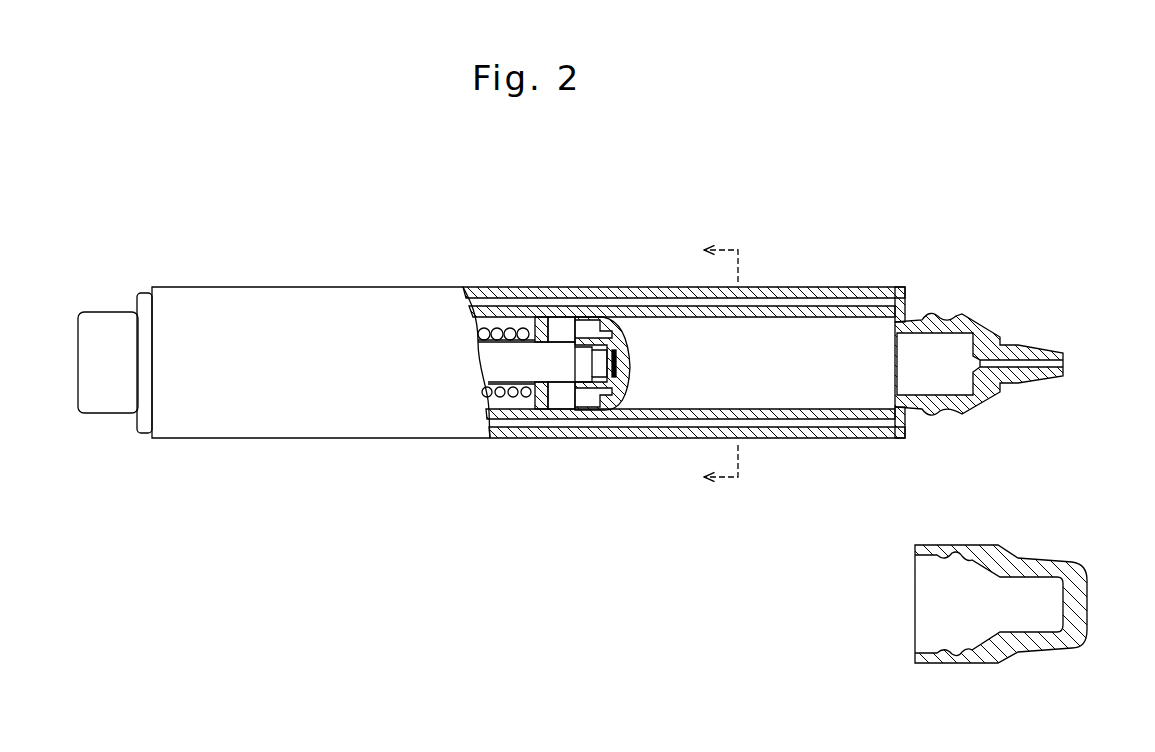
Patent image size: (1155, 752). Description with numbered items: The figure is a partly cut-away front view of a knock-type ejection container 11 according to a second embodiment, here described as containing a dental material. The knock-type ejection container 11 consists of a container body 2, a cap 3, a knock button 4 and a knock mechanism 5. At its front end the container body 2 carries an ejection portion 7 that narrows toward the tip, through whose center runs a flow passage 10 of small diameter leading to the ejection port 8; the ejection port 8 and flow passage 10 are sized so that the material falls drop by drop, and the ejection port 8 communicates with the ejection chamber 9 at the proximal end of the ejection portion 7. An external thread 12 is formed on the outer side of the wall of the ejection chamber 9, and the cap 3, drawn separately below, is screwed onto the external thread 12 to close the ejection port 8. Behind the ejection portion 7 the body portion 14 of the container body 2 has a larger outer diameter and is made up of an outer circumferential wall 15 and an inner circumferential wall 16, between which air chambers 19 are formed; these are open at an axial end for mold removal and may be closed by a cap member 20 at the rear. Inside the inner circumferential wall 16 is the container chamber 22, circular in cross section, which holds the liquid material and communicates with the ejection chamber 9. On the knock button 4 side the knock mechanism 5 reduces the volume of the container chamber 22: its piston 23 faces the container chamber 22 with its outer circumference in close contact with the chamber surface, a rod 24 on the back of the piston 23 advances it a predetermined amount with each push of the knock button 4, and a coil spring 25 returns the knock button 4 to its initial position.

The container body 2 is at (344, 254).
The cap 3 is at (1040, 556).
The knock button 4 is at (100, 408).
The knock mechanism 5 is at (633, 365).
The ejection portion 7 is at (966, 306).
The ejection port 8 is at (1065, 364).
The ejection chamber 9 is at (927, 374).
The flow passage 10 is at (1020, 345).
The knock-type ejection container 11 is at (951, 121).
The external thread 12 is at (953, 416).
The body portion 14 is at (302, 425).
The outer circumferential wall 15 is at (610, 287).
The inner circumferential wall 16 is at (797, 310).
The air chamber 19 is at (797, 438).
The cap member 20 is at (146, 292).
The container chamber 22 is at (772, 374).
The piston 23 is at (632, 405).
The rod 24 is at (557, 376).
The coil spring 25 is at (512, 396).